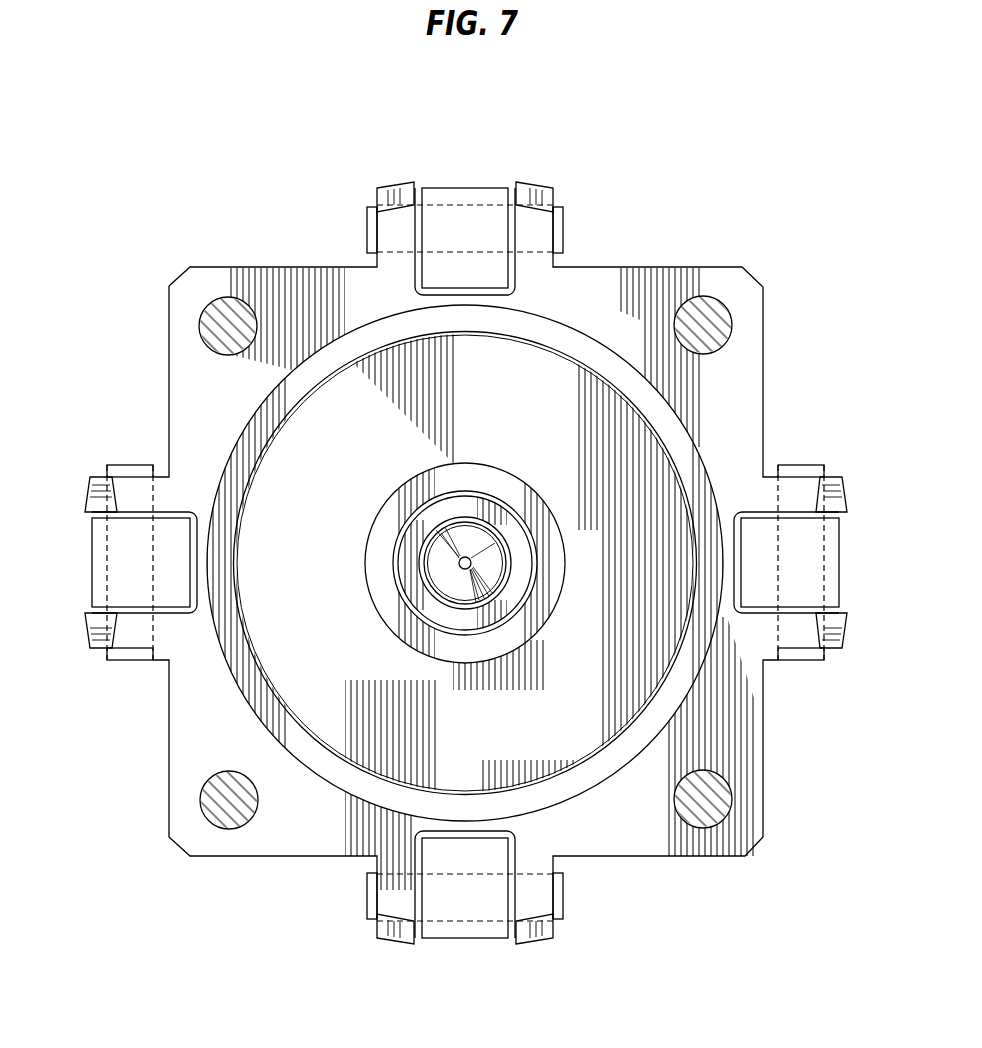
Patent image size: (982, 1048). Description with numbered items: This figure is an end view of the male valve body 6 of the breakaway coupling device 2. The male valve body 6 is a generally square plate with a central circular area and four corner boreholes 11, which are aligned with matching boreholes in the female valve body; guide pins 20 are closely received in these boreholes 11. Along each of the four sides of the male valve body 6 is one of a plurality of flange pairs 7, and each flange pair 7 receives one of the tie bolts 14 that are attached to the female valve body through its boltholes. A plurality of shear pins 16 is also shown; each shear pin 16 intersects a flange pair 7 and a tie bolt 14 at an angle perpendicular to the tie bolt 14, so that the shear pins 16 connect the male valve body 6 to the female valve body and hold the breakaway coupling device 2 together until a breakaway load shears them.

The breakaway coupling device 2 is at (670, 145).
The male valve body 6 is at (267, 268).
The flange pairs 7 is at (401, 182).
The boreholes 11 is at (200, 328).
The tie bolts 14 is at (459, 188).
The shear pins 16 is at (563, 221).
The guide pins 20 is at (226, 322).